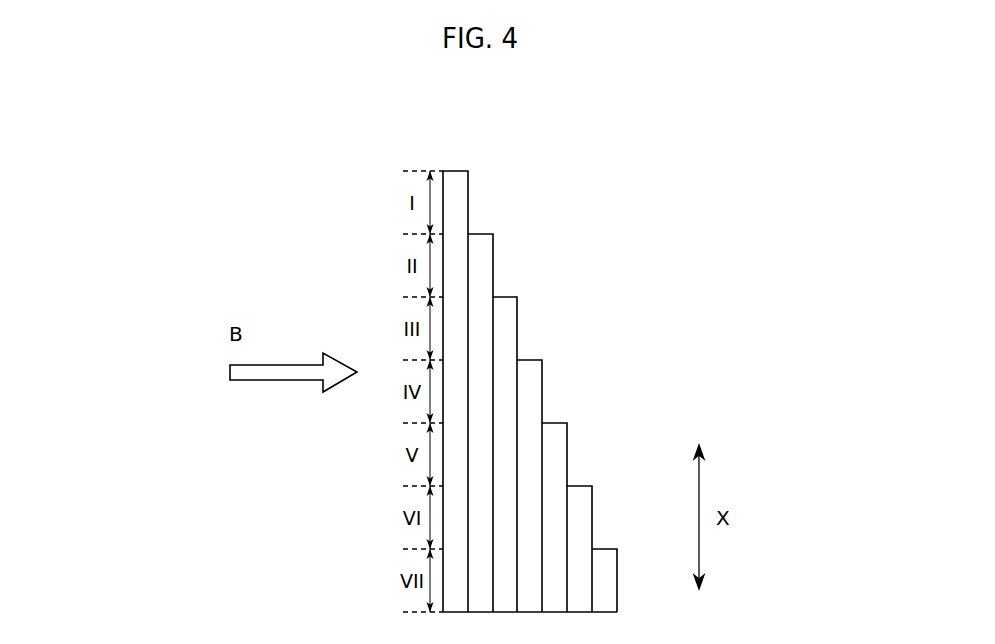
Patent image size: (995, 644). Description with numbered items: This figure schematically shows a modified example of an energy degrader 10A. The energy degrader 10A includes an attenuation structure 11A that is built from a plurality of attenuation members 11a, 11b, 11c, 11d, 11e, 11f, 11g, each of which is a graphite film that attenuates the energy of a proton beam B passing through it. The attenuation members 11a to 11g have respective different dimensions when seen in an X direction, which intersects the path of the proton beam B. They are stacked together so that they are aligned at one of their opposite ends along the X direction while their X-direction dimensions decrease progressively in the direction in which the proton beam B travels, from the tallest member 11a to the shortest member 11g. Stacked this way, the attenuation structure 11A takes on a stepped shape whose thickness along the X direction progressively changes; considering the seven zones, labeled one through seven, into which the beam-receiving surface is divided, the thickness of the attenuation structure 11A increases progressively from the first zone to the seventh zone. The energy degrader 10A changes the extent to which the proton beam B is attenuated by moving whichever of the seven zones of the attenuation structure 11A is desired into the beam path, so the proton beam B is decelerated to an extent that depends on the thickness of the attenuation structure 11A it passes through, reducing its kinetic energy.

The energy degrader 10A is at (662, 146).
The attenuation structure 11A is at (598, 179).
The attenuation member 11a is at (453, 170).
The attenuation member 11b is at (480, 233).
The attenuation member 11c is at (505, 296).
The attenuation member 11d is at (531, 359).
The attenuation member 11e is at (555, 422).
The attenuation member 11f is at (580, 485).
The attenuation member 11g is at (605, 548).